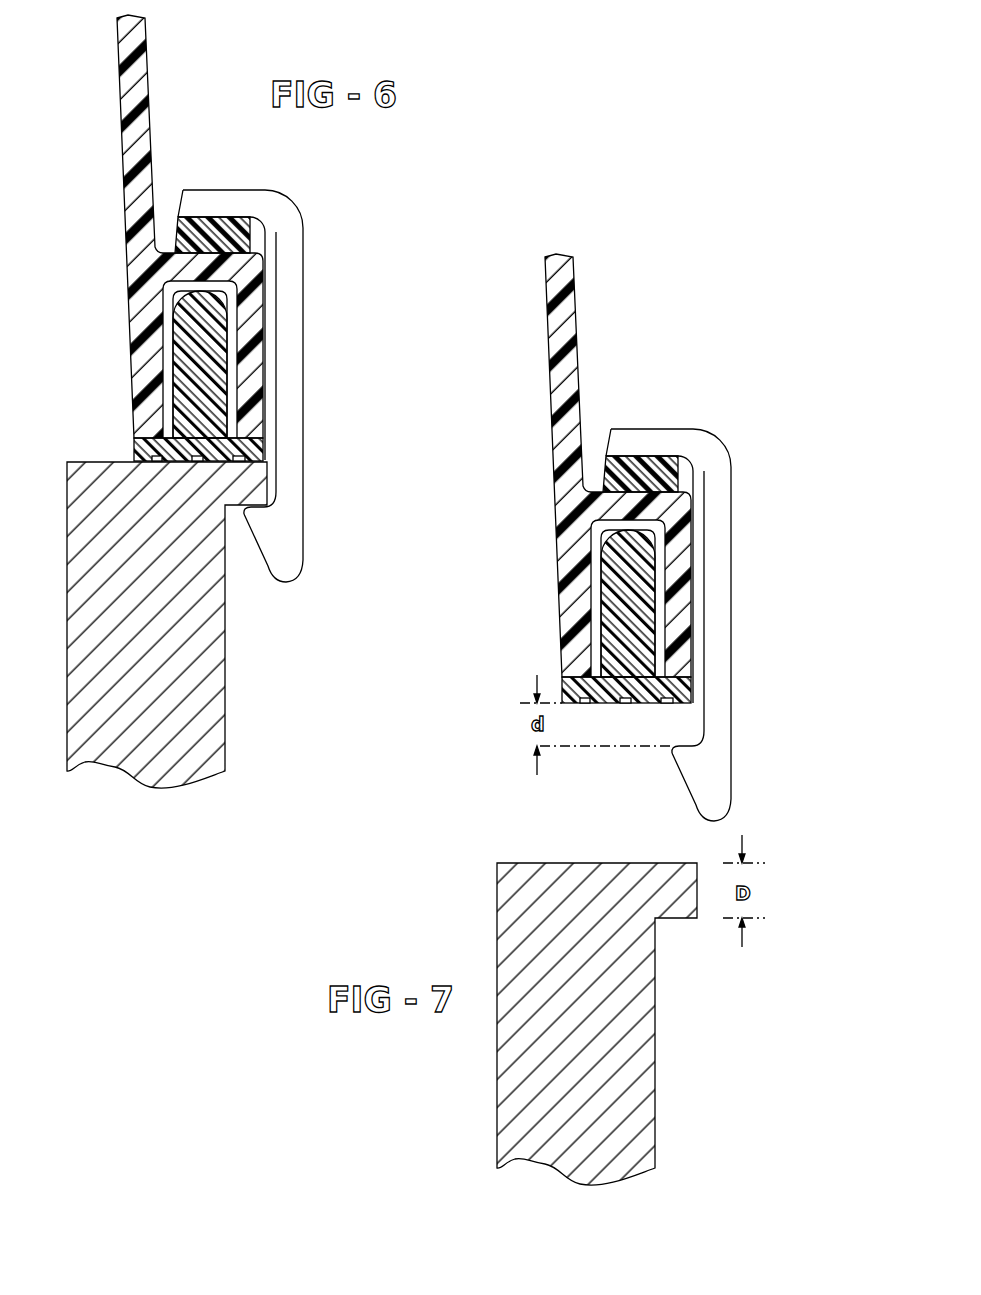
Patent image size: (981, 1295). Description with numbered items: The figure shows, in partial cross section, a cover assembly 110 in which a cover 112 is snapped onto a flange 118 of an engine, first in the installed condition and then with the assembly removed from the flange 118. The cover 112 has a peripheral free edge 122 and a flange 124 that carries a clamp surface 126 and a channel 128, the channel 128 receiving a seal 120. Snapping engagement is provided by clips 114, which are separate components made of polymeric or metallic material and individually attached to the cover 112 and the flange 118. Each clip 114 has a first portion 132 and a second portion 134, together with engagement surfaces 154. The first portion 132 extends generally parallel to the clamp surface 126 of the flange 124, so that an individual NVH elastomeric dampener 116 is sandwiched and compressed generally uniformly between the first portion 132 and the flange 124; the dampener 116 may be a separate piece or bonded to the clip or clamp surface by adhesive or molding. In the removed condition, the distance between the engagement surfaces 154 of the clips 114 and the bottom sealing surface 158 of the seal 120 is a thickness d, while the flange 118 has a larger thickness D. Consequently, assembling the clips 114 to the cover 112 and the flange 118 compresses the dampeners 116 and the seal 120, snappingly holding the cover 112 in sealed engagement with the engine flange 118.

In FIG. 6, the cover assembly 110 is at (316, 164).
In FIG. 7, the cover assembly 110 is at (644, 548).
In FIG. 6, the cover 112 is at (148, 58).
In FIG. 7, the cover 112 is at (618, 464).
In FIG. 6, the clips 114 is at (304, 310).
In FIG. 7, the clips 114 is at (709, 594).
In FIG. 6, the NVH elastomeric dampeners 116 is at (260, 220).
In FIG. 7, the NVH elastomeric dampeners 116 is at (653, 433).
In FIG. 6, the flange 118 is at (250, 477).
In FIG. 7, the flange 118 is at (698, 898).
In FIG. 6, the seal 120 is at (174, 369).
In FIG. 7, the seal 120 is at (586, 603).
In FIG. 6, the peripheral free edge 122 is at (139, 443).
In FIG. 7, the peripheral free edge 122 is at (576, 672).
In FIG. 6, the flange 124 is at (265, 273).
In FIG. 7, the flange 124 is at (742, 600).
In FIG. 6, the clamp surface 126 is at (214, 219).
In FIG. 7, the clamp surface 126 is at (640, 442).
In FIG. 6, the channel 128 is at (234, 352).
In FIG. 7, the channel 128 is at (686, 603).
In FIG. 6, the first portion 132 is at (318, 188).
In FIG. 7, the first portion 132 is at (644, 619).
In FIG. 6, the second portion 134 is at (325, 563).
In FIG. 7, the second portion 134 is at (750, 799).
In FIG. 6, the engagement surfaces 154 is at (268, 496).
In FIG. 7, the engagement surfaces 154 is at (726, 723).
In FIG. 7, the bottom sealing surface 158 is at (612, 704).